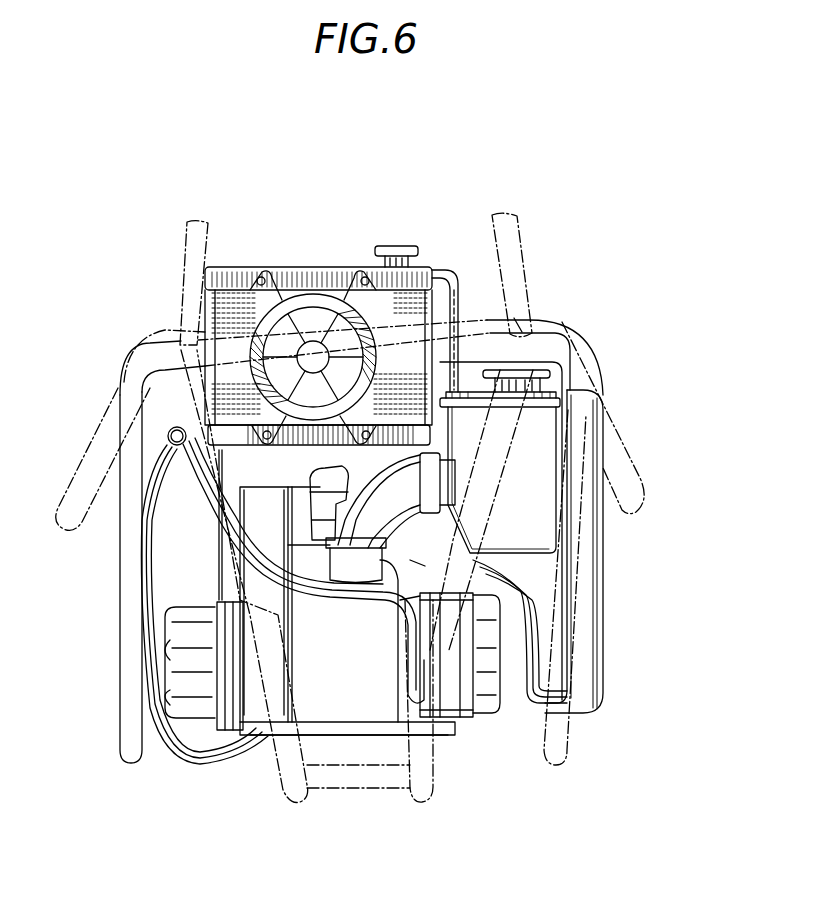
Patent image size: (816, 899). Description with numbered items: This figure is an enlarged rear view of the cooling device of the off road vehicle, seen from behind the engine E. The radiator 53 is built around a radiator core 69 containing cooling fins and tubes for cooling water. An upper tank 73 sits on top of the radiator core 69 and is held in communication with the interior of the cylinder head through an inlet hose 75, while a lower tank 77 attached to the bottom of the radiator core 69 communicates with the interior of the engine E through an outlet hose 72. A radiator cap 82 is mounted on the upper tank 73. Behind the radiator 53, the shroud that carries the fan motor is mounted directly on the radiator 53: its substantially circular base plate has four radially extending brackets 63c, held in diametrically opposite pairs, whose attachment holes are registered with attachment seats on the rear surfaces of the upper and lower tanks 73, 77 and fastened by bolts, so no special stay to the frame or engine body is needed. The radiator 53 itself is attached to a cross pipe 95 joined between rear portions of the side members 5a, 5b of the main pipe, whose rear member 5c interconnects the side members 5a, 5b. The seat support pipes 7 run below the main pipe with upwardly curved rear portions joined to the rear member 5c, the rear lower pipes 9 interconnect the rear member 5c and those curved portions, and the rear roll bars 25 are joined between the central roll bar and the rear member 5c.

The side member 5a is at (78, 508).
The side member 5b is at (638, 480).
The rear member 5c is at (495, 332).
The seat support pipe 7 is at (120, 612).
The rear lower pipe 9 is at (275, 713).
The rear roll bar 25 is at (190, 246).
The radiator 53 is at (388, 298).
The bracket 63c is at (262, 262).
The radiator core 69 is at (238, 302).
The outlet hose 72 is at (343, 603).
The upper tank 73 is at (316, 268).
The inlet hose 75 is at (440, 268).
The lower tank 77 is at (240, 482).
The radiator cap 82 is at (394, 246).
The cross pipe 95 is at (470, 322).
The engine E is at (345, 727).